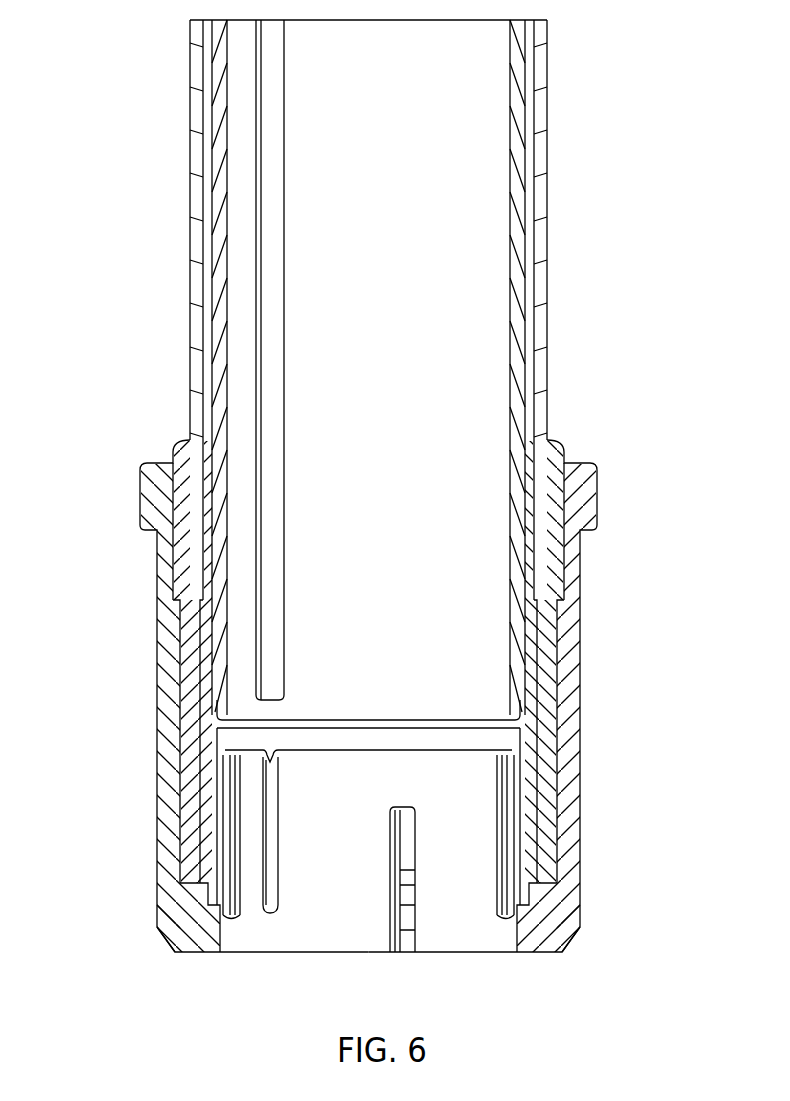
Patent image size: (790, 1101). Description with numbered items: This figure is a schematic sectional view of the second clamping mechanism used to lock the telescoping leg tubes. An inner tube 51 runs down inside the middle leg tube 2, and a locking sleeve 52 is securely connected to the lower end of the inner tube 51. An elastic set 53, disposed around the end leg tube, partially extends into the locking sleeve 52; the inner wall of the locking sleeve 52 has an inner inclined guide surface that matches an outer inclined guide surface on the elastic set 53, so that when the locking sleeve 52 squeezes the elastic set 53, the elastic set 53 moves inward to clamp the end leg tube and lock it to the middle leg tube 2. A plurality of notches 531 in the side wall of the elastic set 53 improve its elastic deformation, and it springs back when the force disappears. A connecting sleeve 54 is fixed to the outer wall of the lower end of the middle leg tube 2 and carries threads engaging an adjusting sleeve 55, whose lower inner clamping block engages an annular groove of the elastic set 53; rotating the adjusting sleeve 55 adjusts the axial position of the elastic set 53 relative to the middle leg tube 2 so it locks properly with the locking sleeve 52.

The middle leg tube 2 is at (545, 325).
The inner tube 51 is at (522, 398).
The locking sleeve 52 is at (525, 718).
The elastic set 53 is at (467, 837).
The notch 531 is at (275, 850).
The connecting sleeve 54 is at (577, 567).
The adjusting sleeve 55 is at (575, 640).